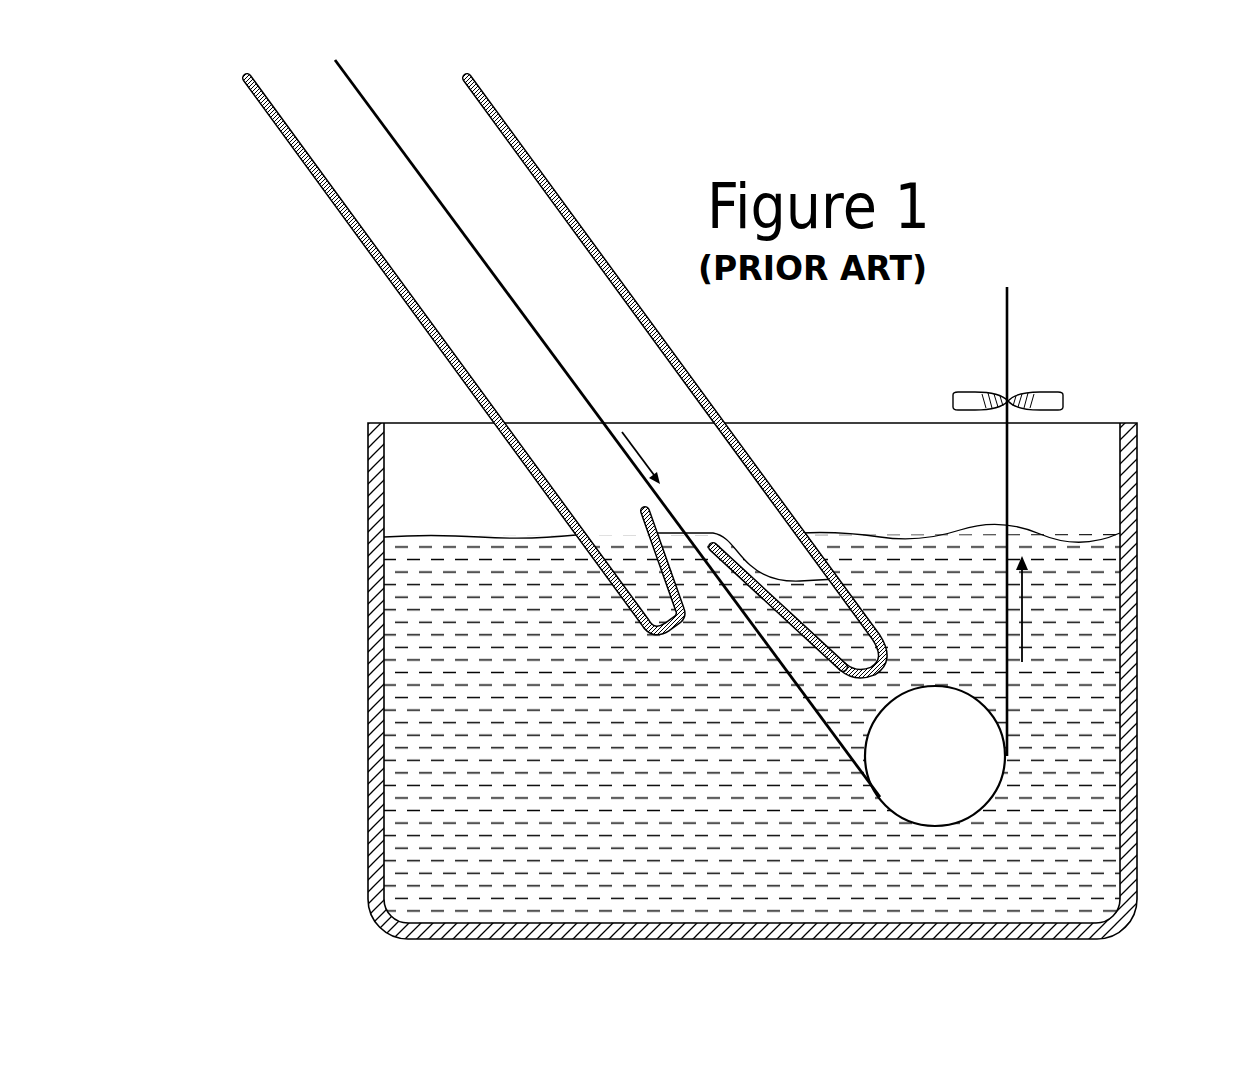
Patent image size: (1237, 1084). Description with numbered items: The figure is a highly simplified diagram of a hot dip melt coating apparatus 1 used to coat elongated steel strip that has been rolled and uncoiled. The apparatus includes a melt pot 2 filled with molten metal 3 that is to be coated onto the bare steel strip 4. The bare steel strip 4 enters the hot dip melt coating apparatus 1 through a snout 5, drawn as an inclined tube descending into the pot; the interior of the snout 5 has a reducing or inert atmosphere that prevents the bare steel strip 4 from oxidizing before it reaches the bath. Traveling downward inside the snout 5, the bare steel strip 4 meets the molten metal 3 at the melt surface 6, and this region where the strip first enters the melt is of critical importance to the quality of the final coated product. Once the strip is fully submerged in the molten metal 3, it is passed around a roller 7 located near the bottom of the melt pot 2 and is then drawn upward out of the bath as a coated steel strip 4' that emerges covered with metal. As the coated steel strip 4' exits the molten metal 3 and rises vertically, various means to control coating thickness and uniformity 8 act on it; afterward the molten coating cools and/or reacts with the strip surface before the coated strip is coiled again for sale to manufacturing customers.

The hot dip melt coating apparatus 1 is at (735, 596).
The melt pot 2 is at (1140, 838).
The molten metal 3 is at (403, 778).
The bare steel strip 4 is at (607, 427).
The coated steel strip 4' is at (1037, 505).
The snout 5 is at (306, 179).
The melt surface 6 is at (695, 533).
The roller 7 is at (935, 756).
The means to control coating thickness and uniformity 8 is at (1045, 385).